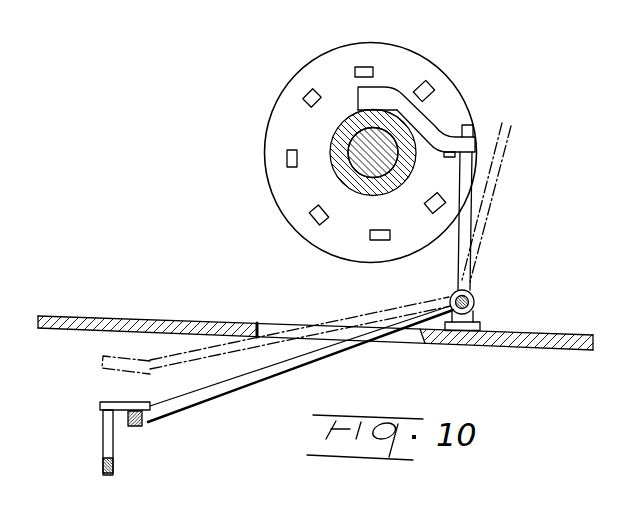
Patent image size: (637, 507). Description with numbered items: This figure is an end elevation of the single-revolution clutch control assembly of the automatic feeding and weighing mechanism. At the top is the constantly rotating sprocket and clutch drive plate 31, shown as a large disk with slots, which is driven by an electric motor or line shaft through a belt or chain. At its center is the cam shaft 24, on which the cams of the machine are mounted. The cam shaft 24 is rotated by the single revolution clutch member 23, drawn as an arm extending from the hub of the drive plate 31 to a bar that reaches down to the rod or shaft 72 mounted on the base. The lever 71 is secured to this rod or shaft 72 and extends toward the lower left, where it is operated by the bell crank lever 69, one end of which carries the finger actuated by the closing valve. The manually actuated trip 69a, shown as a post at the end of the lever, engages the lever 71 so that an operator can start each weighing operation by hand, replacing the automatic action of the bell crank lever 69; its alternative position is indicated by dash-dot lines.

The single revolution clutch member 23 is at (379, 91).
The cam shaft 24 is at (367, 174).
The sprocket and clutch drive plate 31 is at (463, 94).
The bell crank lever 69 is at (133, 430).
The manually actuated trip 69a is at (107, 446).
The lever 71 is at (366, 326).
The rod or shaft 72 is at (477, 300).